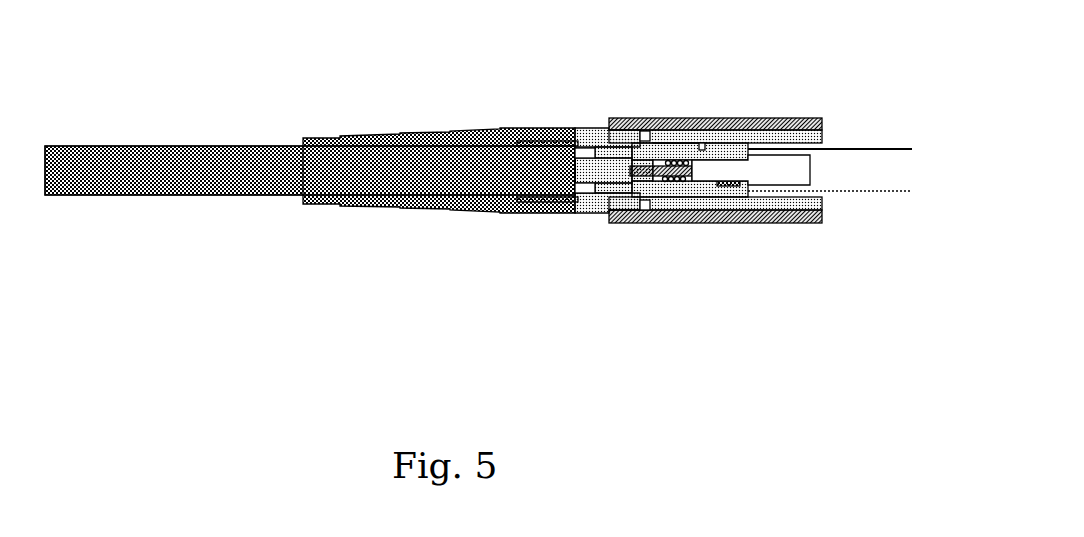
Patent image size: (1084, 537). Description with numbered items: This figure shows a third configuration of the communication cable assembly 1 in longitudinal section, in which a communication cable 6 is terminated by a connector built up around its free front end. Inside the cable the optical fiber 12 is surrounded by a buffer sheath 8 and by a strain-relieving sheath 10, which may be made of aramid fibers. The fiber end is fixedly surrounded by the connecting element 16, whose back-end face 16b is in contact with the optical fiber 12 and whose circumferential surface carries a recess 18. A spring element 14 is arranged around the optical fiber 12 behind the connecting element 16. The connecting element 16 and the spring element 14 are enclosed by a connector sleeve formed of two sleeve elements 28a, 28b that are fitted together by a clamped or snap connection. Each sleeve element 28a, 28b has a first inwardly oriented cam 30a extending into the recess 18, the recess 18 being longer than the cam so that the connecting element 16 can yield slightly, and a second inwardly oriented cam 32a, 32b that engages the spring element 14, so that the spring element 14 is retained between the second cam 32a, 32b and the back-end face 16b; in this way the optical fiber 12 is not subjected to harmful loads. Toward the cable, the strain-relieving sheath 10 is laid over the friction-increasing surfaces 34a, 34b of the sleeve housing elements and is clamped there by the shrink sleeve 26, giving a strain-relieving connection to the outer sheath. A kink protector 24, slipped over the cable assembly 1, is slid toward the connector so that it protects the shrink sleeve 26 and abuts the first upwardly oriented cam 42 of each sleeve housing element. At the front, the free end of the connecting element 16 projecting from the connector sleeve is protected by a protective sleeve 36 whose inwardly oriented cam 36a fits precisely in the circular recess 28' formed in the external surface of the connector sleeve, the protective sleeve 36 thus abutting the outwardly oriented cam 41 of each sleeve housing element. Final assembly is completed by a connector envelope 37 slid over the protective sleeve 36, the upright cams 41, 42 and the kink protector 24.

The communication cable assembly 1 is at (343, 165).
The communication cable 6 is at (343, 165).
The kink protector 24 is at (468, 136).
The shrink sleeve 26 is at (537, 142).
The strain-relieving sheath 10 is at (580, 150).
The surface 34b is at (600, 147).
The surface 34a is at (603, 205).
The first upwardly oriented cam 42 is at (636, 138).
The outwardly oriented cam 41 is at (652, 223).
The second inwardly oriented cam 32a is at (655, 161).
The second inwardly oriented cam 32b is at (655, 161).
The optical fiber 12 is at (670, 163).
The circular recess 28' is at (714, 93).
The inwardly oriented cam 36a is at (702, 146).
The connector envelope 37 is at (733, 125).
The protective sleeve 36 is at (805, 215).
The back-end face 16b is at (765, 136).
The connecting element 16 is at (765, 205).
The first inwardly oriented cam 30a is at (723, 195).
The recess 18 is at (736, 188).
The spring element 14 is at (668, 182).
The sleeve element 28b is at (852, 155).
The sleeve element 28a is at (852, 196).
The buffer sheath 8 is at (588, 172).